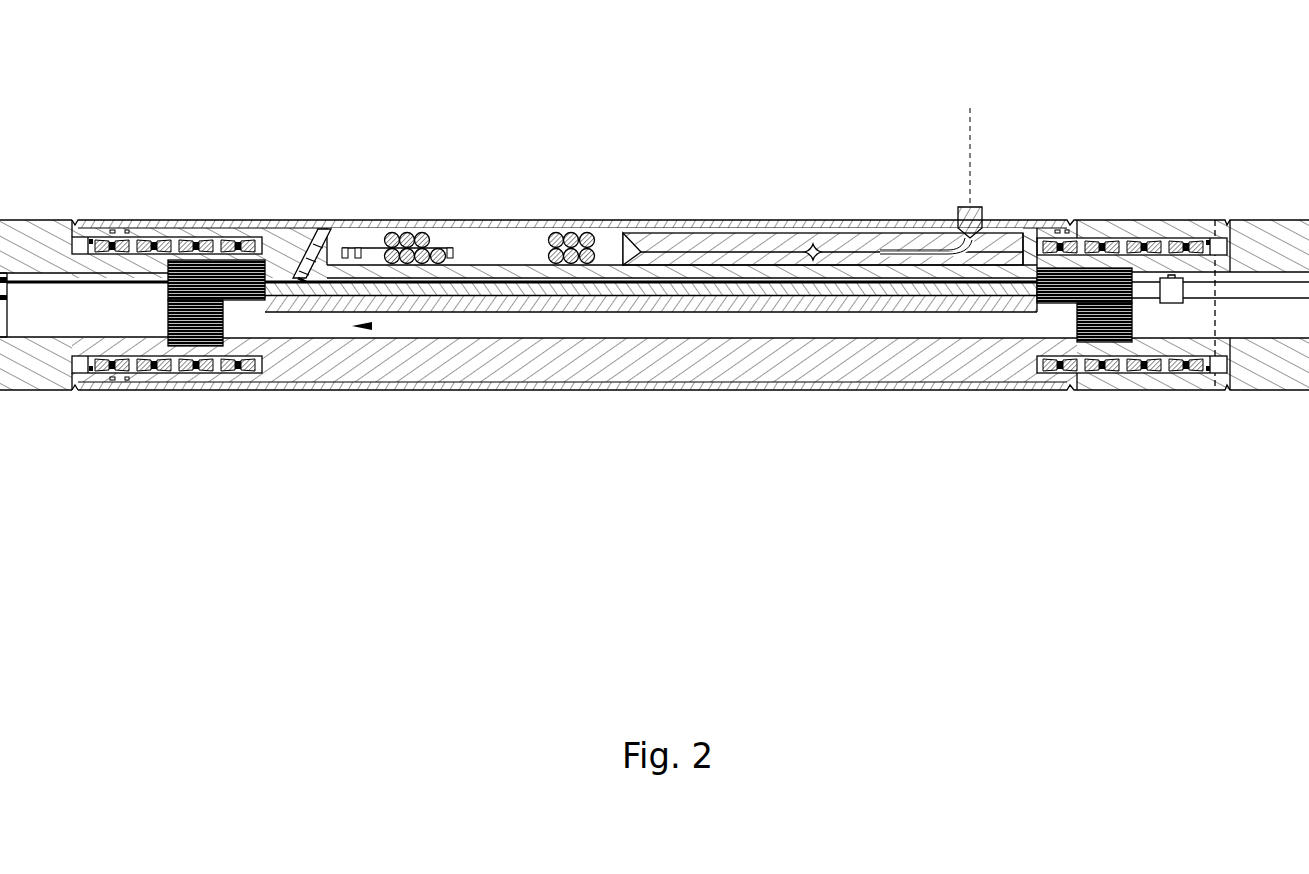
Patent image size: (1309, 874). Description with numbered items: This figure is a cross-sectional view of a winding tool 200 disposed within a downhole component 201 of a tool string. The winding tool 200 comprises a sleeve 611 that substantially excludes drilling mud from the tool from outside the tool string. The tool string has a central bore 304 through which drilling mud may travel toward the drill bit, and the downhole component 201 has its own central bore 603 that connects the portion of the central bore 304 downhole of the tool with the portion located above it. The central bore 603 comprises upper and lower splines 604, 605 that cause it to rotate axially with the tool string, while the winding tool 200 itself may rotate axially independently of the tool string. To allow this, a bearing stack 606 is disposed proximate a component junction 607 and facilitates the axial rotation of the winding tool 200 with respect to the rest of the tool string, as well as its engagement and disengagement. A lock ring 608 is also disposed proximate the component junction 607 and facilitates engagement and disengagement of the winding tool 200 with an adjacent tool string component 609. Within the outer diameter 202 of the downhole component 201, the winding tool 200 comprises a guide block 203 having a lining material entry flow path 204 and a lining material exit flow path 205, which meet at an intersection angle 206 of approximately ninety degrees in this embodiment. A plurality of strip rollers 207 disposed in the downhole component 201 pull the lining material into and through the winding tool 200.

The winding tool 200 is at (580, 58).
The downhole component 201 is at (818, 405).
The outer diameter 202 is at (1220, 306).
The guide block 203 is at (752, 244).
The lining material entry flow path 204 is at (640, 265).
The lining material exit flow path 205 is at (984, 247).
The intersection angle 206 is at (970, 178).
The strip rollers 207 is at (420, 220).
The central bore 304 is at (12, 312).
The central bore 603 is at (322, 326).
The upper spline 604 is at (200, 350).
The lower spline 605 is at (1103, 358).
The bearing stack 606 is at (284, 239).
The component junction 607 is at (80, 410).
The lock ring 608 is at (98, 220).
The adjacent tool string component 609 is at (22, 220).
The sleeve 611 is at (565, 390).